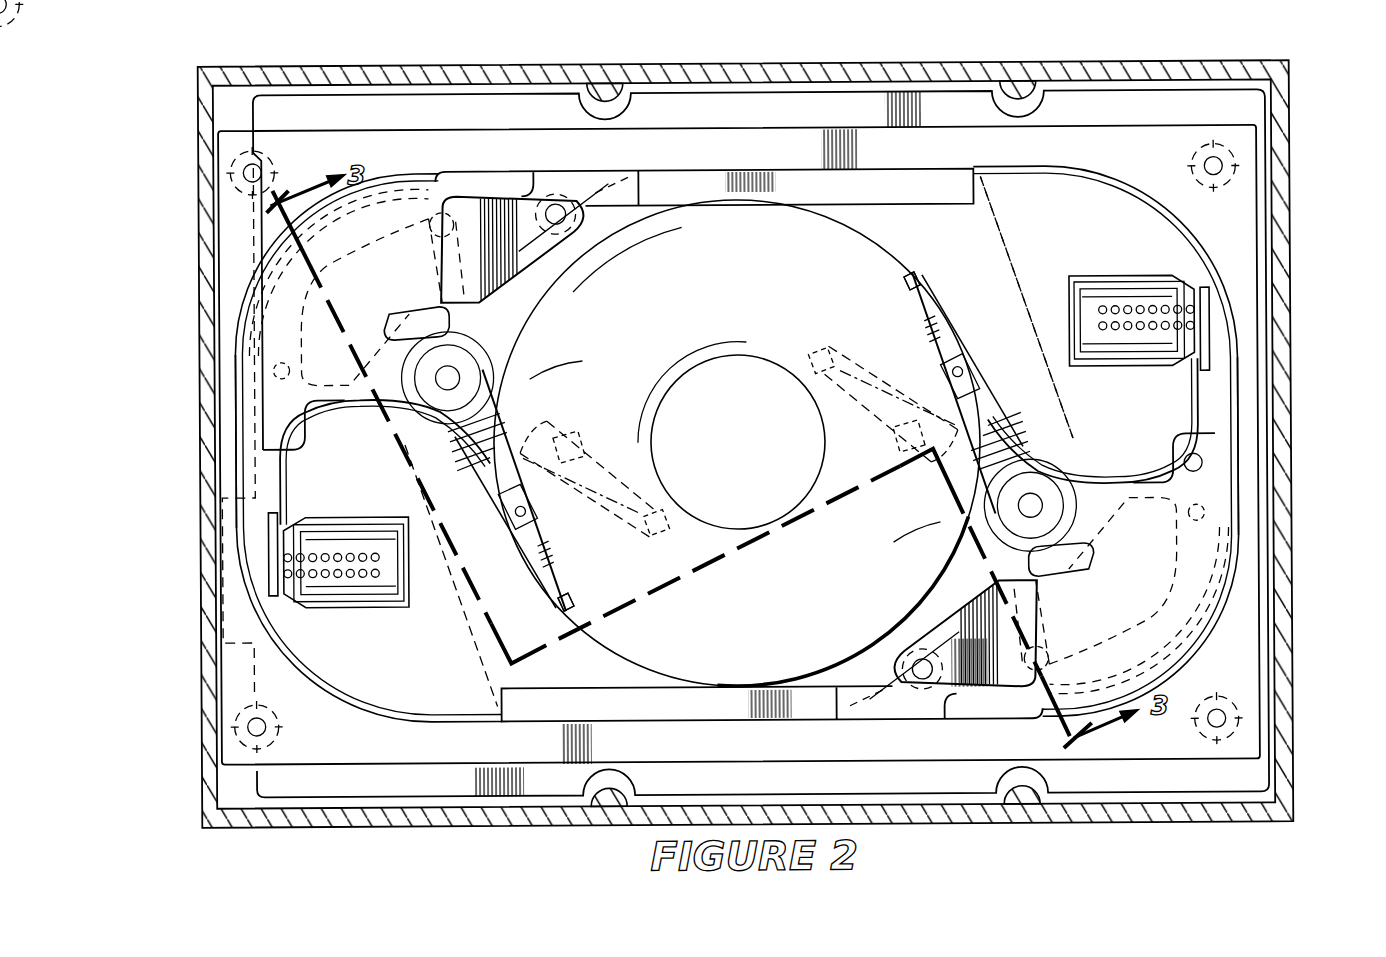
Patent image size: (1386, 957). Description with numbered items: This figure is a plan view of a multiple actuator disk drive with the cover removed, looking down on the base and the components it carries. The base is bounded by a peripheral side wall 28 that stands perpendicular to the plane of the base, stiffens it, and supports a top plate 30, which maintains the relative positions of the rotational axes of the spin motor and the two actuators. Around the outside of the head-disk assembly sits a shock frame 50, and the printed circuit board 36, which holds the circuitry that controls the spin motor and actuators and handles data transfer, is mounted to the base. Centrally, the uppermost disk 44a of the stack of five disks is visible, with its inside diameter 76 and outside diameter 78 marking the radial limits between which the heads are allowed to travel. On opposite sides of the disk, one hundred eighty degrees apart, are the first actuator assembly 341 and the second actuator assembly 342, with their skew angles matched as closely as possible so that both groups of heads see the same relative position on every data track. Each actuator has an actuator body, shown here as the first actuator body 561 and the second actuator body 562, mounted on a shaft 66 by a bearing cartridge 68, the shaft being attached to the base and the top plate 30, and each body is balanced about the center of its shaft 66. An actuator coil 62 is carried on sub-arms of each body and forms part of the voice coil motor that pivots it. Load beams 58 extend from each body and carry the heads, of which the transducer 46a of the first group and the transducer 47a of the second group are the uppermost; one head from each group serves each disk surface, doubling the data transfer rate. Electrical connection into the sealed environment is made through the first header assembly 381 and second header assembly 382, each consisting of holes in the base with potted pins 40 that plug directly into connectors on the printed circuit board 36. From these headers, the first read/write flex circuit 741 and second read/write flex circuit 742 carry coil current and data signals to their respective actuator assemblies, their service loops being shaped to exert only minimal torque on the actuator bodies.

The peripheral side wall 28 is at (280, 645).
The top plate 30 is at (520, 672).
The printed circuit board 36 is at (286, 782).
The shock frame 50 is at (512, 815).
The disk 44a is at (782, 299).
The inside diameter 76 is at (687, 352).
The outside diameter 78 is at (680, 228).
The shaft 66 is at (448, 376).
The actuator coil 62 is at (437, 205).
The bearing cartridge 68 is at (428, 393).
The actuator body 561 is at (505, 418).
The actuator body 562 is at (973, 467).
The transducer 46a is at (592, 584).
The transducer 47a is at (905, 280).
The load beam 58 is at (540, 540).
The first actuator assembly 341 is at (581, 371).
The second actuator assembly 342 is at (891, 542).
The pins 40 is at (377, 568).
The first header assembly 381 is at (260, 540).
The second header assembly 382 is at (1235, 349).
The read/write flex circuit 741 is at (278, 452).
The read/write flex circuit 742 is at (1193, 408).